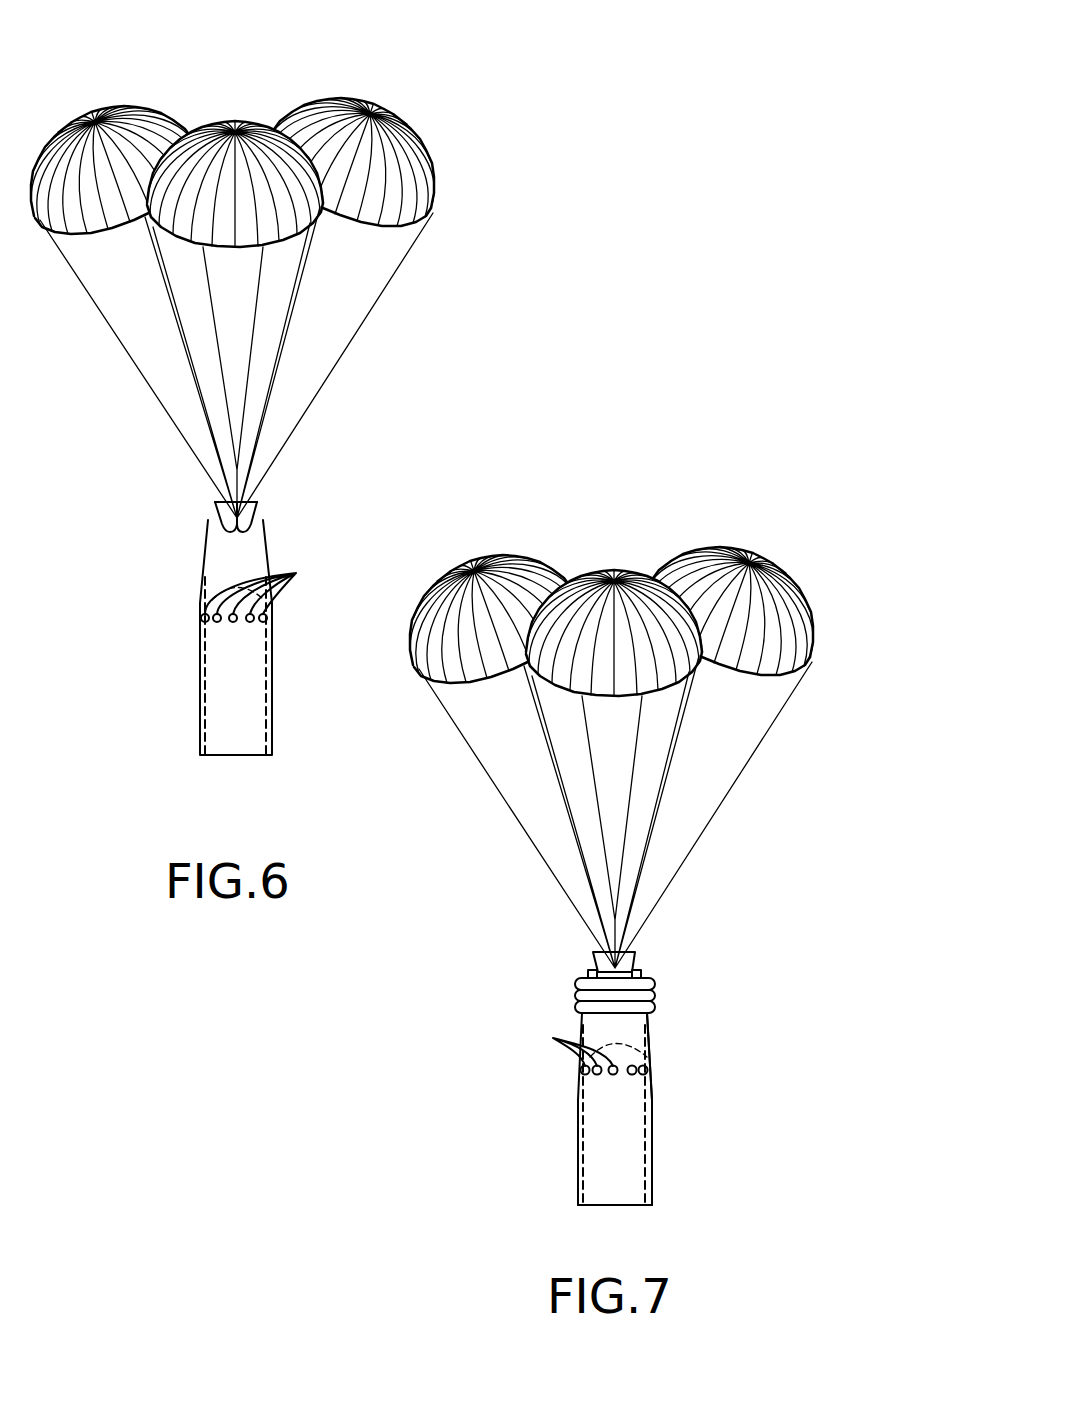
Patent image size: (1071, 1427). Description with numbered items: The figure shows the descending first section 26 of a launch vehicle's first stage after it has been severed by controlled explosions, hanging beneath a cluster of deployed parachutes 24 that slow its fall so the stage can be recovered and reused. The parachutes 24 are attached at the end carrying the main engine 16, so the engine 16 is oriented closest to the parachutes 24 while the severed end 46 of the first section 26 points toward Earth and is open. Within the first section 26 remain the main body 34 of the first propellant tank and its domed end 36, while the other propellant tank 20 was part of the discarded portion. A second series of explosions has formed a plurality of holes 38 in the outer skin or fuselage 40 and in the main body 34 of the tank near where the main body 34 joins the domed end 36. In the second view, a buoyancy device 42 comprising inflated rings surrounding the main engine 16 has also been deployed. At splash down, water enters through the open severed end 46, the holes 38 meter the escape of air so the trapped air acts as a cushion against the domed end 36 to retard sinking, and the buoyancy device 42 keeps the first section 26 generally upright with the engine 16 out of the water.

In FIG. 6, the parachute 24 is at (253, 93).
In FIG. 7, the parachute 24 is at (642, 527).
In FIG. 6, the main engine 16 is at (257, 502).
In FIG. 7, the main engine 16 is at (635, 953).
In FIG. 6, the first section 26 is at (210, 578).
In FIG. 7, the first section 26 is at (652, 1187).
In FIG. 6, the propellant tank 20 is at (225, 715).
In FIG. 6, the holes 38 is at (298, 572).
In FIG. 7, the holes 38 is at (550, 1037).
In FIG. 7, the buoyancy device 42 is at (662, 988).
In FIG. 7, the domed end 36 is at (617, 1043).
In FIG. 7, the main body 34 is at (602, 1147).
In FIG. 7, the fuselage 40 is at (652, 1120).
In FIG. 7, the severed end 46 is at (615, 1205).